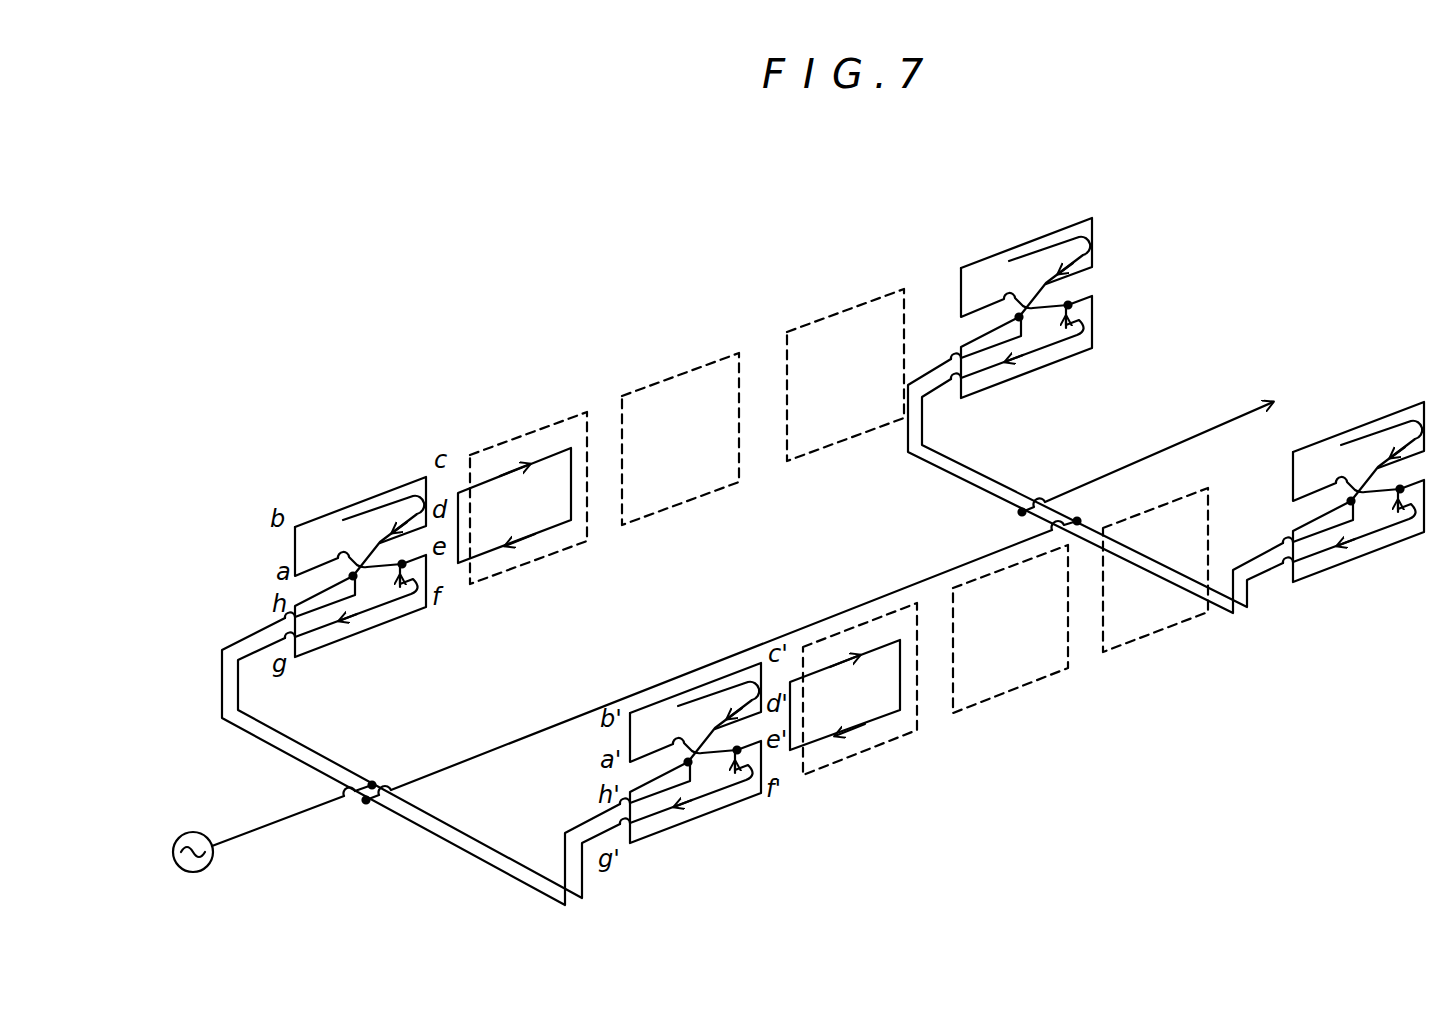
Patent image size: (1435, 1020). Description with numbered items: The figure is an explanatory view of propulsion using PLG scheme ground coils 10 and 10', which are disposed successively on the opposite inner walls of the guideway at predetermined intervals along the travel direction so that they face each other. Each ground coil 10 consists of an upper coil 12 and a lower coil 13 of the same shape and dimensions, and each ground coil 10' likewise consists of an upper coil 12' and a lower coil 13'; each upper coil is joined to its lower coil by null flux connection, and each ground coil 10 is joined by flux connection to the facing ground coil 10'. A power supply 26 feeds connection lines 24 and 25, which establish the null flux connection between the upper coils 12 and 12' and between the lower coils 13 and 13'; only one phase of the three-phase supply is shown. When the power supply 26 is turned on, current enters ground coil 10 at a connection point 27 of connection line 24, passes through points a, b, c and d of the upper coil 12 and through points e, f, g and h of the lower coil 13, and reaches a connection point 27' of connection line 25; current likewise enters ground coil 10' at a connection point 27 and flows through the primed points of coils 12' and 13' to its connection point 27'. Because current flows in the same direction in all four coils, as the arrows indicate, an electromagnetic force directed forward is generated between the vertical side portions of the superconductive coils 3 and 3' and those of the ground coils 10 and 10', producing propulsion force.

The superconductive coil 3 is at (522, 462).
The superconductive coil 3' is at (867, 722).
The PLG scheme ground coil 10 is at (688, 397).
The PLG scheme ground coil 10' is at (1044, 649).
The upper coil 12 is at (318, 528).
The upper coil 12' is at (650, 719).
The lower coil 13 is at (355, 628).
The lower coil 13' is at (728, 794).
The connection line 24 is at (980, 468).
The connection line 25 is at (960, 480).
The power supply 26 is at (178, 838).
The connection point 27 is at (742, 632).
The connection point 27' is at (675, 677).